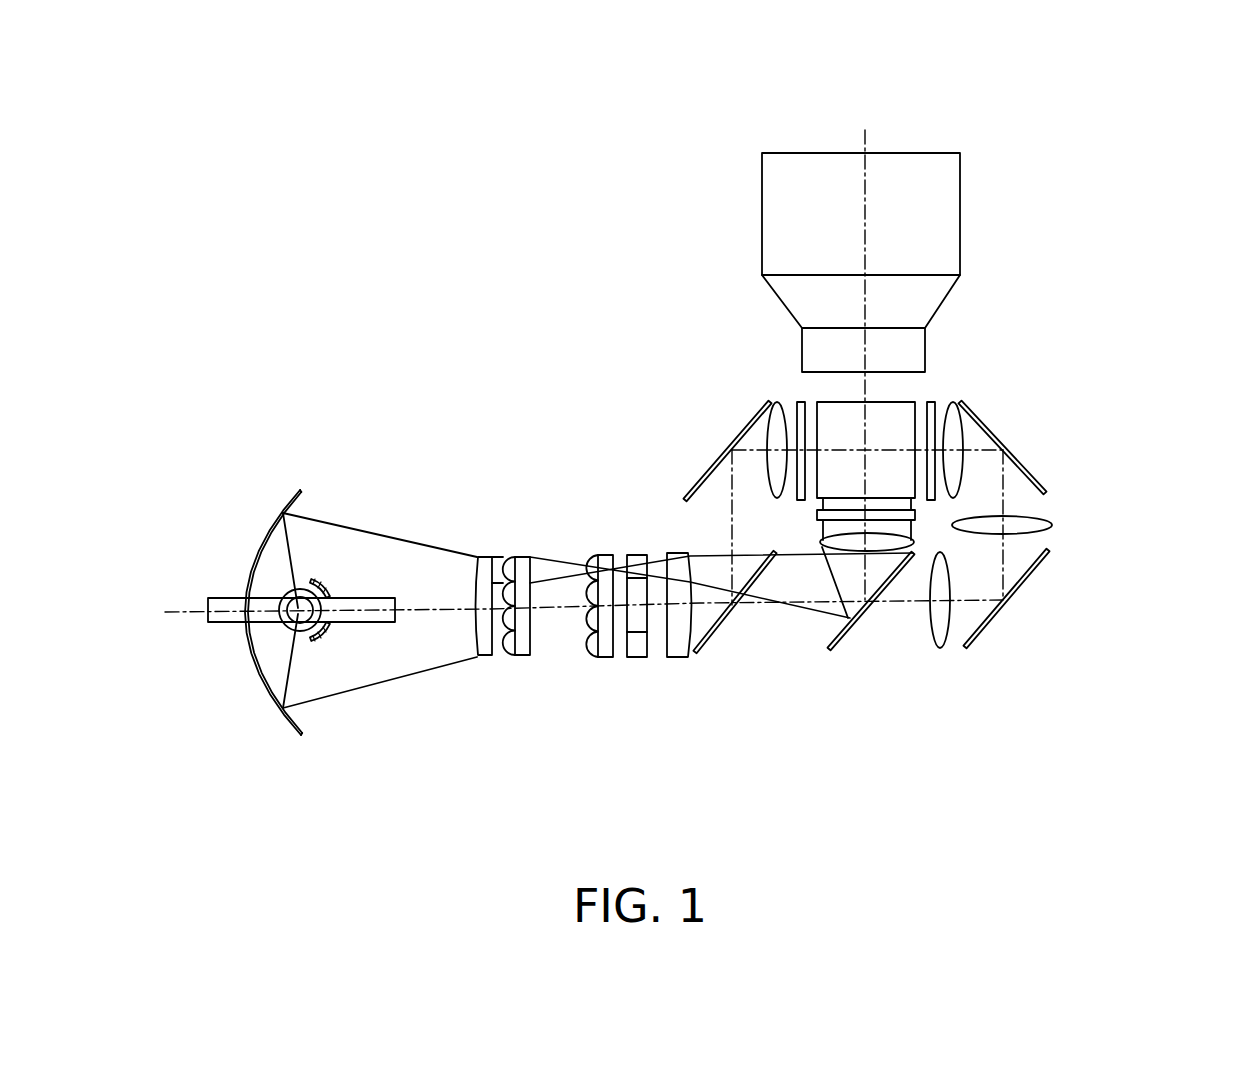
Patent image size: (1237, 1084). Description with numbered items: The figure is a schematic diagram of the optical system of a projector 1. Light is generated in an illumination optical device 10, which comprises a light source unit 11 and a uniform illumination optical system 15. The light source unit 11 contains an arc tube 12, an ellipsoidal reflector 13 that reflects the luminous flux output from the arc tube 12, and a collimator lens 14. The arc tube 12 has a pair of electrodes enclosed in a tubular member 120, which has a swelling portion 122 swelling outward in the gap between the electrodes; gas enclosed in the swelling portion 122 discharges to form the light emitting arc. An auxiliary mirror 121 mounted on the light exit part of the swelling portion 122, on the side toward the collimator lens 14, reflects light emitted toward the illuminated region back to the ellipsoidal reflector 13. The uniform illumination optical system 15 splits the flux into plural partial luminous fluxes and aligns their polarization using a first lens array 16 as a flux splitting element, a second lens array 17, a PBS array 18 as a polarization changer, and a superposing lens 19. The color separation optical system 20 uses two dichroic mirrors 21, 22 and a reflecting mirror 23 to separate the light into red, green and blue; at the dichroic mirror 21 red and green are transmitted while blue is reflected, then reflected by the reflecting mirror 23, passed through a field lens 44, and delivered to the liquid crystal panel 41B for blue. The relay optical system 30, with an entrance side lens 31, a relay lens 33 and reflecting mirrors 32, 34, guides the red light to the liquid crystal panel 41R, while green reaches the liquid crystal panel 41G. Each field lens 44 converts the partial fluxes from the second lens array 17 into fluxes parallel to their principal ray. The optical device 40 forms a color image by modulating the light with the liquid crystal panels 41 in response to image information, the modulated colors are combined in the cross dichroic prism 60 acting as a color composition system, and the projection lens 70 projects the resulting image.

The projector 1 is at (1062, 152).
The integrator illumination optical system 10 is at (430, 445).
The light source unit 11 is at (265, 762).
The arc tube 12 is at (365, 623).
The ellipsoidal reflector 13 is at (287, 714).
The collimator lens 14 is at (473, 658).
The uniform illumination optical system 15 is at (517, 720).
The first lens array 16 is at (525, 656).
The second lens array 17 is at (605, 658).
The PBS array 18 is at (636, 658).
The superposing lens 19 is at (678, 658).
The color separation optical system 20 is at (677, 393).
The dichroic mirror 21 is at (720, 625).
The dichroic mirror 22 is at (835, 640).
The reflecting mirror 23 is at (747, 430).
The relay optical system 30 is at (1123, 472).
The entrance side lens 31 is at (942, 648).
The reflecting mirror 32 is at (997, 612).
The relay lens 33 is at (1052, 525).
The reflecting mirror 34 is at (1042, 480).
The optical device 40 is at (998, 368).
The liquid crystal panel 41 is at (887, 531).
The liquid crystal panel for blue 41B is at (798, 404).
The liquid crystal panel for red 41R is at (935, 402).
The liquid crystal panel for green 41G is at (920, 517).
The field lens 44 is at (768, 478).
The cross dichroic prism 60 is at (907, 398).
The projection lens 70 is at (965, 225).
The tubular member 120 is at (395, 620).
The auxiliary mirror 121 is at (308, 577).
The swelling portion 122 is at (288, 590).